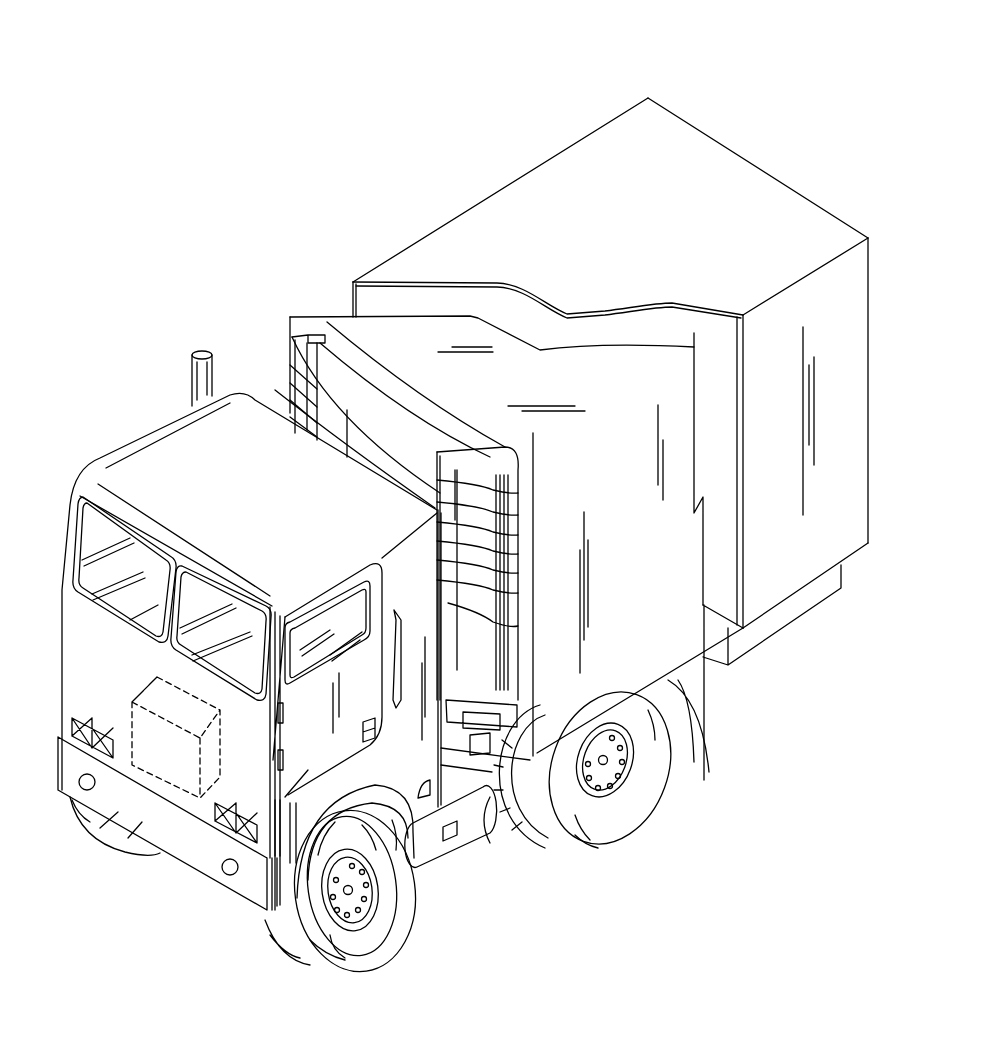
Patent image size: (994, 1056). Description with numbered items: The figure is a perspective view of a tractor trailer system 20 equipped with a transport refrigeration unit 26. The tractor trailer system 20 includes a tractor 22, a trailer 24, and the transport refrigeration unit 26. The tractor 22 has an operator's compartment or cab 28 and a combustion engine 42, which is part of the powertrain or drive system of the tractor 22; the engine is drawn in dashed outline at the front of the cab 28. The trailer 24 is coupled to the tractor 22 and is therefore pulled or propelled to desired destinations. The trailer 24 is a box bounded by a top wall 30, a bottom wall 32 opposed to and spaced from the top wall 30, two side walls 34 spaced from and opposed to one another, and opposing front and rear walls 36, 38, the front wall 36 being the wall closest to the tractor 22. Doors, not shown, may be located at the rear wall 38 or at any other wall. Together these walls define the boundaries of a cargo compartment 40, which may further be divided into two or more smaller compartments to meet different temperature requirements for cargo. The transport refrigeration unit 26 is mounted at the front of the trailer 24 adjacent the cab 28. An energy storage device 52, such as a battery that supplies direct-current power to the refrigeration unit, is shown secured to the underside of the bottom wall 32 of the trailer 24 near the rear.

The tractor trailer system 20 is at (207, 103).
The tractor 22 is at (117, 465).
The trailer 24 is at (478, 191).
The transport refrigeration unit 26 is at (321, 334).
The cab 28 is at (345, 628).
The top wall 30 is at (583, 150).
The bottom wall 32 is at (853, 560).
The side walls 34 is at (857, 332).
The front wall 36 is at (541, 390).
The rear wall 38 is at (813, 205).
The cargo compartment 40 is at (654, 327).
The combustion engine 42 is at (163, 783).
The energy storage device 52 is at (743, 645).